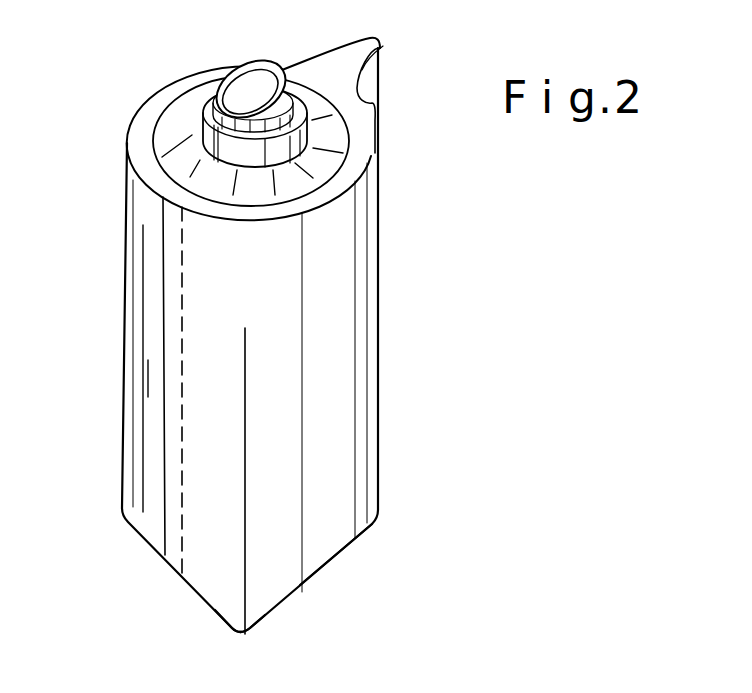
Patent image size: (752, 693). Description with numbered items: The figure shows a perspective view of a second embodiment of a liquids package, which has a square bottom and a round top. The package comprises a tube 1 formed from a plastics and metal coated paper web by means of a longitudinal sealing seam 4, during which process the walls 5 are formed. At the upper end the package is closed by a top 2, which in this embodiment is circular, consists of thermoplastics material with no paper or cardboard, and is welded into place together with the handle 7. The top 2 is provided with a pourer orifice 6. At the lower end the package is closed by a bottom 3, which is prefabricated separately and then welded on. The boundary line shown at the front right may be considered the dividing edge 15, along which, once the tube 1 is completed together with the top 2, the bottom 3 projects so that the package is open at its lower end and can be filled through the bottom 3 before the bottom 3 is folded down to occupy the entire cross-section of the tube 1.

The tube 1 is at (382, 318).
The top 2 is at (195, 115).
The bottom 3 is at (196, 604).
The longitudinal sealing seam 4 is at (172, 376).
The walls 5 is at (331, 346).
The pourer orifice 6 is at (255, 85).
The handle 7 is at (373, 78).
The dividing edge 15 is at (335, 562).